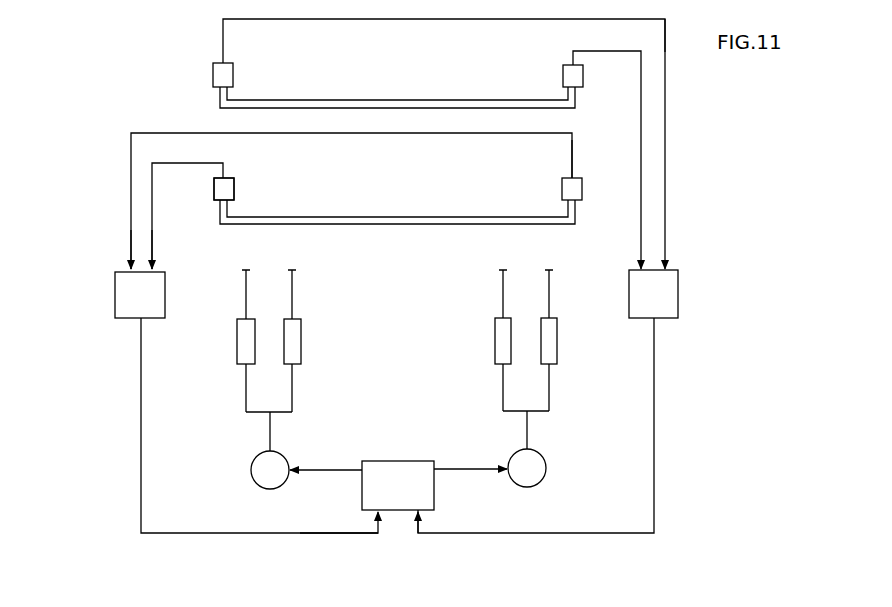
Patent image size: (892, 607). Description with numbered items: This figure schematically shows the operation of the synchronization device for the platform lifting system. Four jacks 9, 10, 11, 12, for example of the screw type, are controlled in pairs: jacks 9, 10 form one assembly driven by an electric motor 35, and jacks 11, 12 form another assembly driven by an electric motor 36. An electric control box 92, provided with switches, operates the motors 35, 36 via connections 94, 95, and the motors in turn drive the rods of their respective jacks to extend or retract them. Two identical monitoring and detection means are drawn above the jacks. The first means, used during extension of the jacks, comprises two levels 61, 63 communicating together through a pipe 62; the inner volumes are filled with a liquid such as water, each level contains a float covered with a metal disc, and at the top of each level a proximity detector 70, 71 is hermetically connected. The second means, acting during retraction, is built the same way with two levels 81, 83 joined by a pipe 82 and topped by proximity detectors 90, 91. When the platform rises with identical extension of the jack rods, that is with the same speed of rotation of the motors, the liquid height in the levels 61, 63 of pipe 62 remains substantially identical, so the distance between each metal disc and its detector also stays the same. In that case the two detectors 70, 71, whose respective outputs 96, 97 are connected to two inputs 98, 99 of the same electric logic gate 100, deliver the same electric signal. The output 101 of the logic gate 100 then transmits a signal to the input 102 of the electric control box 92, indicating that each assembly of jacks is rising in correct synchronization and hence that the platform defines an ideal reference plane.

The jack 9 is at (237, 334).
The jack 10 is at (301, 332).
The jack 11 is at (495, 334).
The jack 12 is at (557, 327).
The electric motor 35 is at (257, 485).
The electric motor 36 is at (540, 480).
The level 61 is at (217, 200).
The pipe 62 is at (378, 217).
The level 63 is at (562, 199).
The proximity detector 70 is at (215, 182).
The proximity detector 71 is at (546, 159).
The level 81 is at (213, 80).
The pipe 82 is at (430, 100).
The level 83 is at (563, 80).
The proximity detector 90 is at (219, 63).
The proximity detector 91 is at (568, 65).
The electric control box 92 is at (410, 461).
The connection 94 is at (330, 470).
The connection 95 is at (470, 470).
The output 96 is at (223, 168).
The output 97 is at (572, 165).
The input 98 is at (129, 258).
The input 99 is at (153, 260).
The electric logic gate 100 is at (115, 292).
The output 101 is at (141, 335).
The input 102 is at (360, 533).